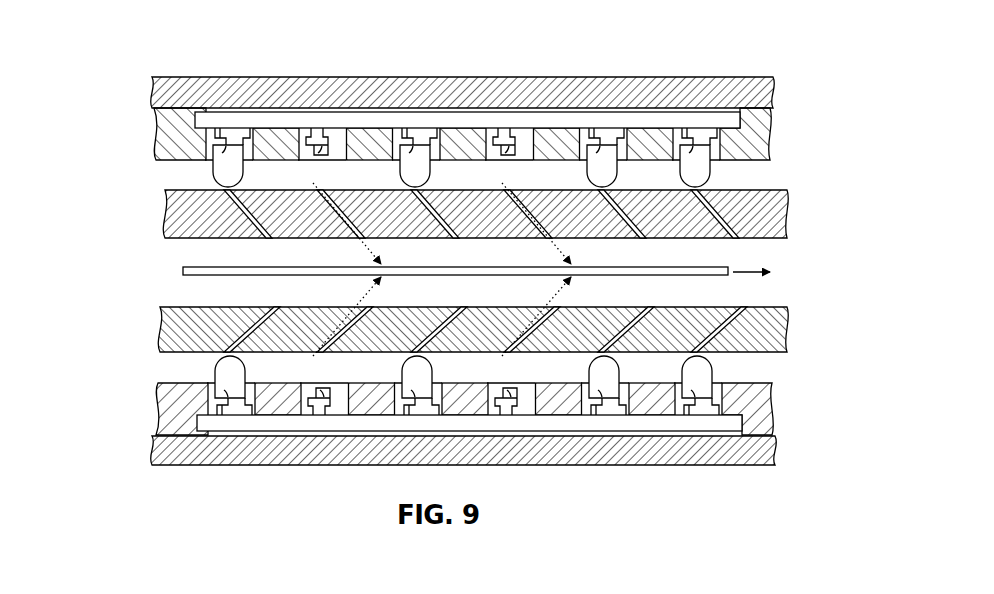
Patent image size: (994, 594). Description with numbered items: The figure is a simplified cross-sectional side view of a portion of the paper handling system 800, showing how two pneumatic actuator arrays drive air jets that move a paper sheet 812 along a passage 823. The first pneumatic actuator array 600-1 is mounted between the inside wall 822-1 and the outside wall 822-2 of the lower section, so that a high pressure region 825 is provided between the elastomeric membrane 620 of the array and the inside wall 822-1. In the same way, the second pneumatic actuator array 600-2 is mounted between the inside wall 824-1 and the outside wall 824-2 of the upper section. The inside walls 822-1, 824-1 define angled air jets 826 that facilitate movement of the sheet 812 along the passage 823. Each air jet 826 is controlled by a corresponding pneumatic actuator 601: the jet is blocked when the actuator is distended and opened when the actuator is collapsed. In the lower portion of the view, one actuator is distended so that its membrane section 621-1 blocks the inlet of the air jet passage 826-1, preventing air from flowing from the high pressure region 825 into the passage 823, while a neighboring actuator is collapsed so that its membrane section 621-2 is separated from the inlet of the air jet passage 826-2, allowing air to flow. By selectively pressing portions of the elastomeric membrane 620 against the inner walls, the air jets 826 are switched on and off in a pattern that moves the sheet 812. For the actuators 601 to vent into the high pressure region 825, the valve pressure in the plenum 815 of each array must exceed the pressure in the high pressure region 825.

The paper handling system 800 is at (187, 59).
The pneumatic actuator 601 is at (588, 124).
The outside wall 824-2 is at (777, 80).
The pneumatic actuator array 600-2 is at (419, 266).
The inside wall 824-1 is at (791, 193).
The air jet 826 is at (641, 238).
The passage 823 is at (150, 267).
The sheet 812 is at (183, 273).
The air jet passage 826-1 is at (269, 306).
The air jet passage 826-2 is at (359, 306).
The inside wall 822-1 is at (495, 316).
The high pressure region 825 is at (768, 372).
The membrane section 621-1 is at (213, 376).
The second contact 621-2 is at (329, 385).
The elastomeric membrane 620 is at (402, 374).
The pneumatic actuator array 600-1 is at (456, 428).
The plenum 815 is at (622, 422).
The outside wall 822-2 is at (775, 456).